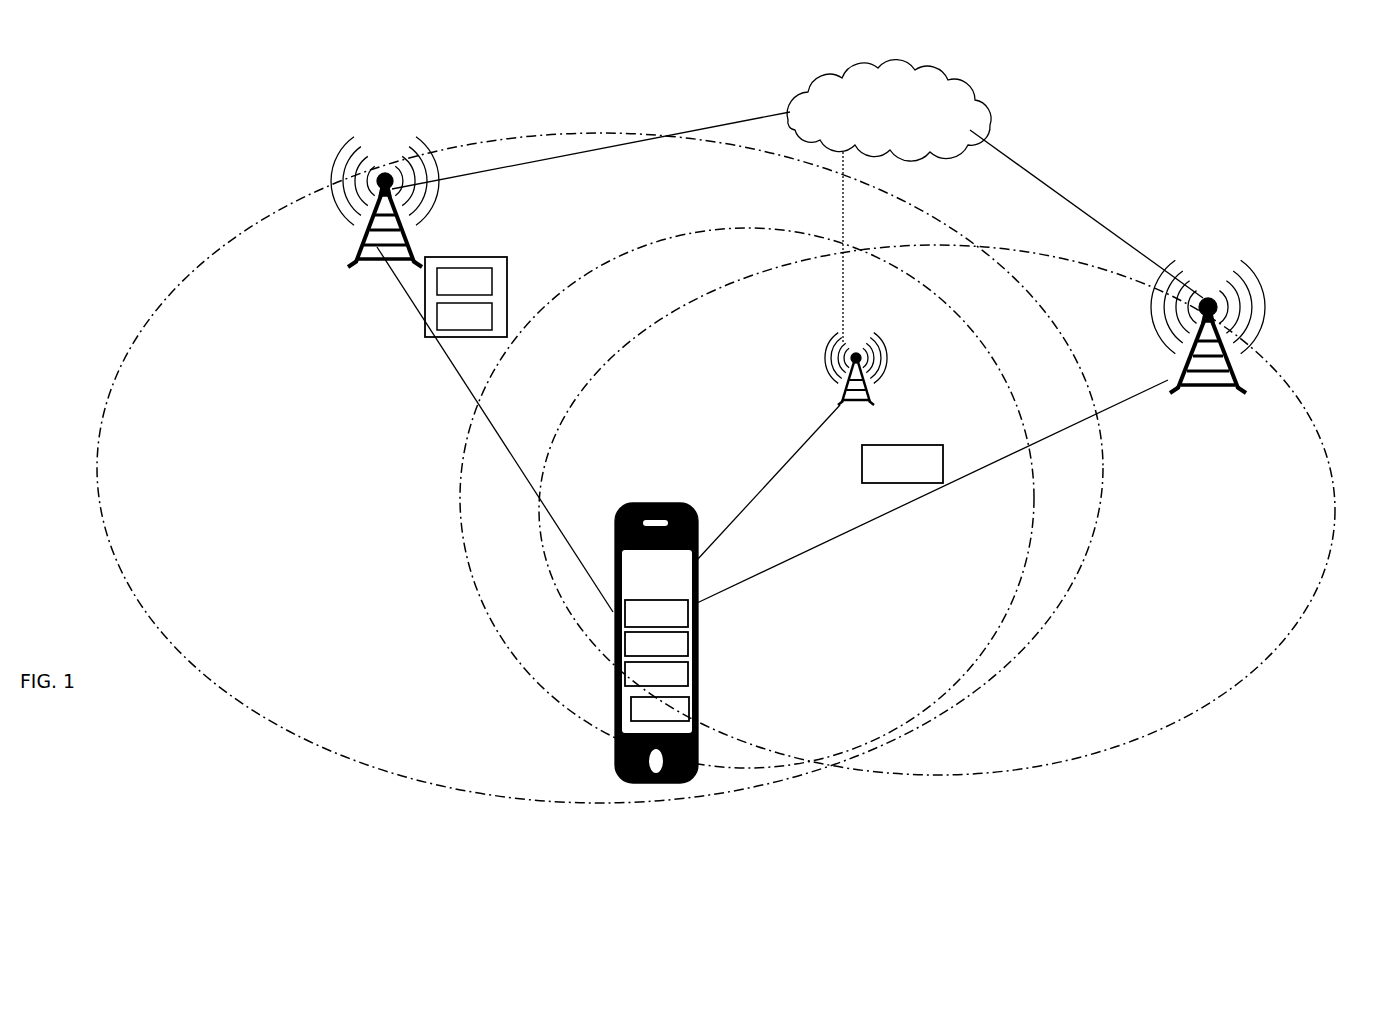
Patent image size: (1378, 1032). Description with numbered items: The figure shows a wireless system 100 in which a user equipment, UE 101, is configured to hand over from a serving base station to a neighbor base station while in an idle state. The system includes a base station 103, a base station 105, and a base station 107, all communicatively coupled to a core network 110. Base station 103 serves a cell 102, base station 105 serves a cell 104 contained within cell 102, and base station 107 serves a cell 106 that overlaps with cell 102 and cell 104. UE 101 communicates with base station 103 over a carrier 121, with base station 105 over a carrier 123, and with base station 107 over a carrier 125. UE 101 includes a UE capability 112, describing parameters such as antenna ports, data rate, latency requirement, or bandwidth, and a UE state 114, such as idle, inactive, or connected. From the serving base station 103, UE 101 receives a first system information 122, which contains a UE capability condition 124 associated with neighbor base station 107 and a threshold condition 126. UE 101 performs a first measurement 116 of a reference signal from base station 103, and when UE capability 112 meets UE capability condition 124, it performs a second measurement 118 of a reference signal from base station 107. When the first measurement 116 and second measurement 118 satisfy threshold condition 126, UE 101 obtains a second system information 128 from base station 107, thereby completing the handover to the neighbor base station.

The wireless system 100 is at (248, 148).
The user equipment (UE) 101 is at (937, 514).
The cell 102 is at (200, 416).
The base station 103 is at (360, 243).
The cell 104 is at (678, 277).
The base station 105 is at (857, 352).
The cell 106 is at (1185, 703).
The base station 107 is at (1207, 296).
The core network 110 is at (889, 110).
The UE capability 112 is at (656, 613).
The UE state 114 is at (656, 644).
The first measurement 116 is at (656, 674).
The second measurement 118 is at (660, 709).
The carrier 121 is at (453, 367).
The first system information 122 is at (581, 268).
The carrier 123 is at (803, 448).
The UE capability condition 124 is at (464, 316).
The carrier 125 is at (1135, 396).
The threshold condition 126 is at (464, 281).
The second system information 128 is at (902, 464).